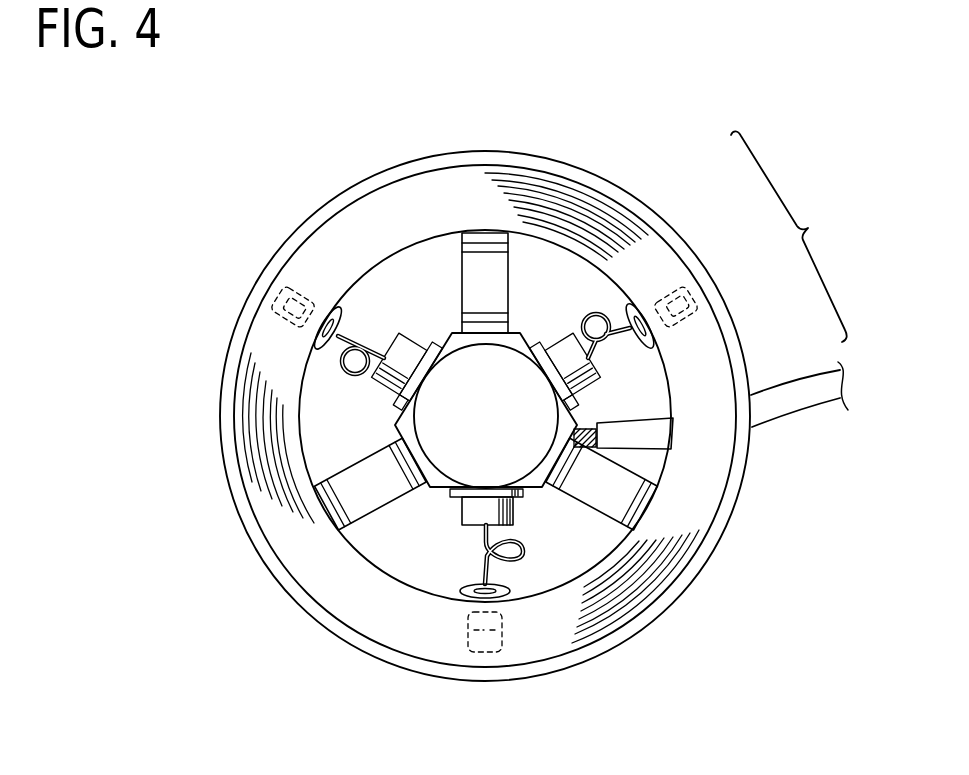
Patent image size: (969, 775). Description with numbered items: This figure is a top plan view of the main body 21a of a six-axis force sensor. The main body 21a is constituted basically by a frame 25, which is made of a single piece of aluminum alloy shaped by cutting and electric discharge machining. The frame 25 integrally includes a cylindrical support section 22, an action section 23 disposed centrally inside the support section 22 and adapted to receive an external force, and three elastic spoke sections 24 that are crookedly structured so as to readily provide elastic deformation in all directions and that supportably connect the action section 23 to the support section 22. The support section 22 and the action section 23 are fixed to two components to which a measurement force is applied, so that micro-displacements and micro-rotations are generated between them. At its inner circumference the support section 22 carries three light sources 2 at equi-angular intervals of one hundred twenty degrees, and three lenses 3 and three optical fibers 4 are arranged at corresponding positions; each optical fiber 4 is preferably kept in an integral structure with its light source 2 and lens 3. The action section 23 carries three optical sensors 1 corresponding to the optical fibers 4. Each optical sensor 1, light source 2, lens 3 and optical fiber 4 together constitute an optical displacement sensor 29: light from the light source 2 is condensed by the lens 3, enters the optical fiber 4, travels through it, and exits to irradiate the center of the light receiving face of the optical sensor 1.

The optical sensor 1 is at (573, 370).
The light source 2 is at (698, 290).
The lens 3 is at (640, 304).
The optical fiber 4 is at (597, 312).
The main body 21a is at (240, 252).
The support section 22 is at (322, 582).
The action section 23 is at (493, 365).
The elastic spoke section 24 is at (470, 272).
The frame 25 is at (752, 468).
The optical displacement sensor 29 is at (793, 236).